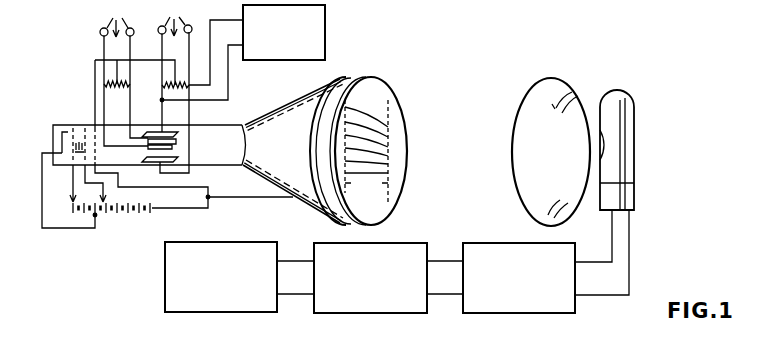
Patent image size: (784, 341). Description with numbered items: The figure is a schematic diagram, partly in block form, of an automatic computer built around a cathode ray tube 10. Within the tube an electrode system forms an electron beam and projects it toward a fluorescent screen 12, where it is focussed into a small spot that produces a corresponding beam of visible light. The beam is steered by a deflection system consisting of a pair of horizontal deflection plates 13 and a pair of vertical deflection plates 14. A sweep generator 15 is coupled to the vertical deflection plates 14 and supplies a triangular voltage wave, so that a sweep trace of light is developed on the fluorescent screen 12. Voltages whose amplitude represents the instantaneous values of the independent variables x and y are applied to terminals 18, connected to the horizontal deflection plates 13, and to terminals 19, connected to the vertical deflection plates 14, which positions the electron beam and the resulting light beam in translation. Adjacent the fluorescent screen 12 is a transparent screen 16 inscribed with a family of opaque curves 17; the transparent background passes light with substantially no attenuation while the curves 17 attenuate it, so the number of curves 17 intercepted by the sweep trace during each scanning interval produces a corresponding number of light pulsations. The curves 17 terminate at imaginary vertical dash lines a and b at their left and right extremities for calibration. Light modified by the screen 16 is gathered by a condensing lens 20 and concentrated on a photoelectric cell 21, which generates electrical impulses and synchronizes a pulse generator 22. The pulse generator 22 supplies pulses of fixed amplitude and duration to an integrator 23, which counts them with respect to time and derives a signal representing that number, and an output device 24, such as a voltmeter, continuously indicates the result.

The cathode ray tube 10 is at (305, 201).
The fluorescent screen 12 is at (343, 79).
The horizontal deflection plates 13 is at (185, 147).
The vertical deflection plates 14 is at (143, 147).
The sweep generator 15 is at (326, 48).
The transparent screen 16 is at (390, 102).
The family of opaque curves 17 is at (377, 125).
The terminals 18 is at (117, 45).
The terminals 19 is at (175, 46).
The condensing lens 20 is at (522, 104).
The photoelectric cell 21 is at (611, 96).
The pulse generator 22 is at (537, 243).
The integrator 23 is at (376, 243).
The output device 24 is at (247, 242).